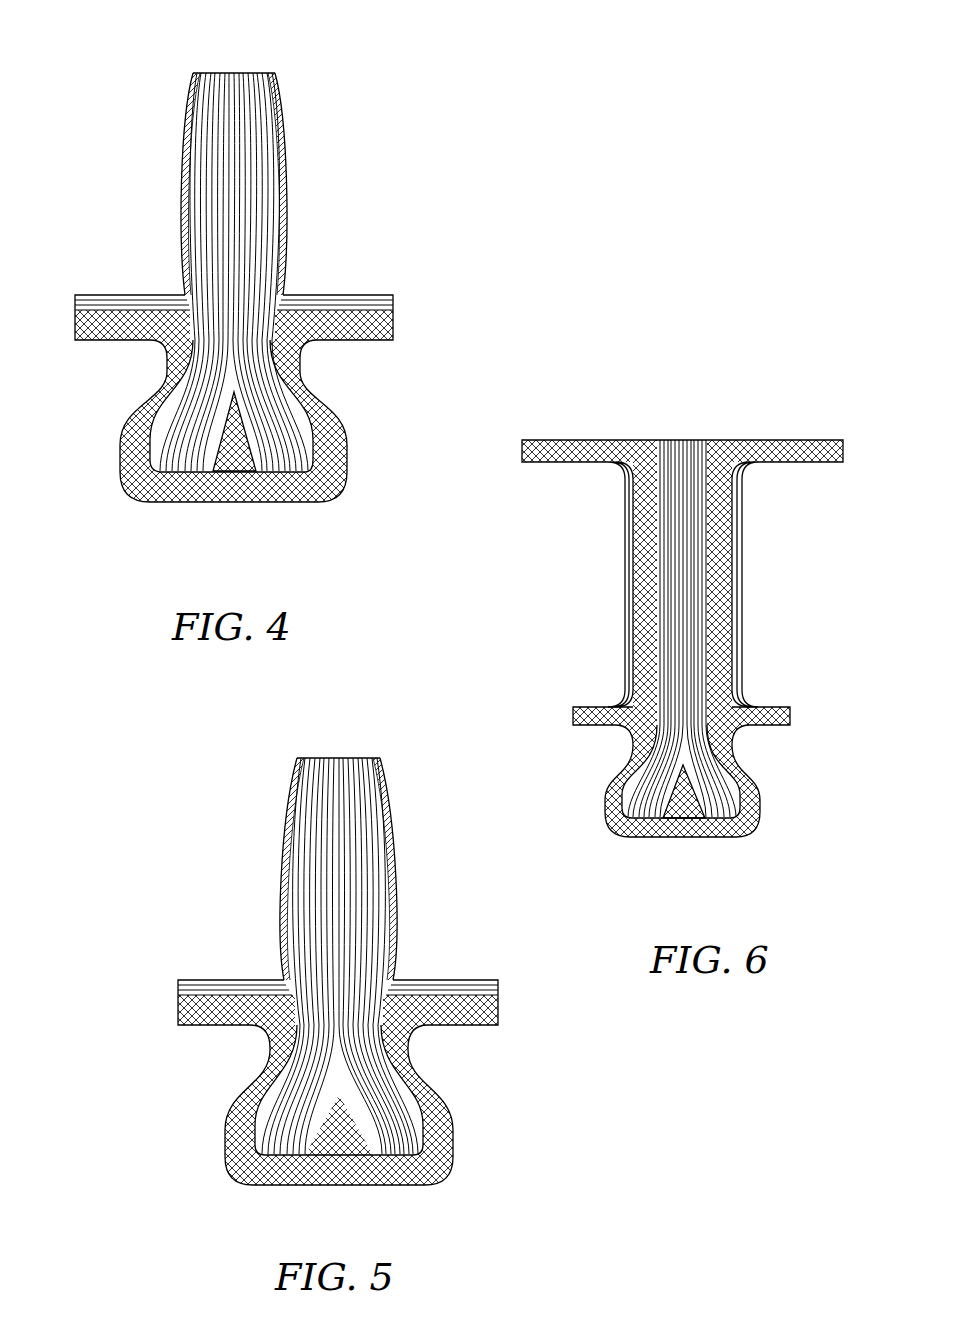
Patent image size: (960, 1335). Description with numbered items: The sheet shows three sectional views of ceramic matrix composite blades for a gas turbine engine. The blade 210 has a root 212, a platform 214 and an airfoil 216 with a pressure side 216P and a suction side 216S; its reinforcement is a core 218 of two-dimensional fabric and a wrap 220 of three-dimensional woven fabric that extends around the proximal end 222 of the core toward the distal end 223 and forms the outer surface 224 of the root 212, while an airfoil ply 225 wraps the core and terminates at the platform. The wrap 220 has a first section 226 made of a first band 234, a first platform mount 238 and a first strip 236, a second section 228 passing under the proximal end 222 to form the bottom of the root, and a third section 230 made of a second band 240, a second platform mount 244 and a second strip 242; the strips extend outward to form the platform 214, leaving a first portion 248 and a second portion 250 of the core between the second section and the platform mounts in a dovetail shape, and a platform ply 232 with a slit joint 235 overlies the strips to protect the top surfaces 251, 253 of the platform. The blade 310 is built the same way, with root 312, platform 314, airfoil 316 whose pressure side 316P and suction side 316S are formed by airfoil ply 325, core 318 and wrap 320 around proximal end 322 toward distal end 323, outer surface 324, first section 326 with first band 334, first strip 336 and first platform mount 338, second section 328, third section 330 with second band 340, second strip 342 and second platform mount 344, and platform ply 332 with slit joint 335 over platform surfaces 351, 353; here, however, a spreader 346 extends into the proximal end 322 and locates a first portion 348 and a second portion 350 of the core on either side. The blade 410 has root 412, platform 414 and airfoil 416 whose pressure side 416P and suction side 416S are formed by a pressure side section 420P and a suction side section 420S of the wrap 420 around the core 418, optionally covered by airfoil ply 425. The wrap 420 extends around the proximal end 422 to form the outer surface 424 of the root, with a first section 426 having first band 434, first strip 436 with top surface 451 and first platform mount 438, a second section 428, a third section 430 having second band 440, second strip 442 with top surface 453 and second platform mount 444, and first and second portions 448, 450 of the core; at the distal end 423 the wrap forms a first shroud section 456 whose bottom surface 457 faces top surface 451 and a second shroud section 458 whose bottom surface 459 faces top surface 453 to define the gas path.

In FIG. 4, the ceramic matrix composite blade 210 is at (112, 72).
In FIG. 4, the root 212 is at (117, 455).
In FIG. 4, the platform 214 is at (96, 305).
In FIG. 4, the airfoil 216 is at (178, 207).
In FIG. 4, the suction side 216S is at (181, 155).
In FIG. 4, the pressure side 216P is at (283, 165).
In FIG. 4, the core 218 is at (259, 71).
In FIG. 4, the wrap 220 is at (400, 325).
In FIG. 4, the proximal end 222 is at (250, 470).
In FIG. 4, the distal end 223 is at (212, 71).
In FIG. 4, the outer surface 224 is at (205, 504).
In FIG. 4, the airfoil ply 225 is at (292, 115).
In FIG. 4, the first section 226 is at (320, 400).
In FIG. 4, the second section 228 is at (245, 492).
In FIG. 4, the third section 230 is at (165, 380).
In FIG. 4, the platform ply 232 is at (397, 292).
In FIG. 4, the first band 234 is at (352, 432).
In FIG. 4, the slit joint 235 is at (78, 283).
In FIG. 4, the first strip 236 is at (306, 322).
In FIG. 4, the first platform mount 238 is at (306, 325).
In FIG. 4, the second band 240 is at (135, 420).
In FIG. 4, the second strip 242 is at (88, 325).
In FIG. 4, the second platform mount 244 is at (178, 336).
In FIG. 4, the first portion of the core 248 is at (305, 471).
In FIG. 4, the second portion of the core 250 is at (173, 463).
In FIG. 4, the top surface of the platform 251 is at (388, 297).
In FIG. 4, the top surface of the platform 253 is at (103, 320).
In FIG. 5, the ceramic matrix composite blade 310 is at (225, 775).
In FIG. 5, the root 312 is at (222, 1148).
In FIG. 5, the platform 314 is at (198, 993).
In FIG. 5, the airfoil 316 is at (280, 900).
In FIG. 5, the suction side 316S is at (282, 843).
In FIG. 5, the pressure side 316P is at (395, 868).
In FIG. 5, the core 318 is at (343, 756).
In FIG. 5, the wrap 320 is at (504, 1010).
In FIG. 5, the proximal end 322 is at (298, 1135).
In FIG. 5, the distal end 323 is at (361, 756).
In FIG. 5, the outer surface 324 is at (360, 1188).
In FIG. 5, the airfoil ply 325 is at (400, 793).
In FIG. 5, the first section 326 is at (432, 1095).
In FIG. 5, the second section 328 is at (386, 1190).
In FIG. 5, the third section 330 is at (262, 1072).
In FIG. 5, the platform ply 332 is at (500, 977).
In FIG. 5, the first band 334 is at (457, 1118).
In FIG. 5, the slit joint 335 is at (178, 975).
In FIG. 5, the first strip 336 is at (466, 1030).
In FIG. 5, the first platform mount 338 is at (412, 1005).
In FIG. 5, the second band 340 is at (228, 1118).
In FIG. 5, the second strip 342 is at (197, 1030).
In FIG. 5, the second platform mount 344 is at (276, 1017).
In FIG. 5, the spreader 346 is at (338, 1142).
In FIG. 5, the first portion of the core 348 is at (405, 1158).
In FIG. 5, the second portion of the core 350 is at (290, 1160).
In FIG. 5, the top layer 351 is at (490, 985).
In FIG. 5, the second layer 353 is at (208, 1003).
In FIG. 6, the ceramic matrix composite blade 410 is at (856, 438).
In FIG. 6, the root 412 is at (602, 812).
In FIG. 6, the platform 414 is at (583, 704).
In FIG. 6, the airfoil 416 is at (632, 565).
In FIG. 6, the suction side 416S is at (632, 604).
In FIG. 6, the pressure side 416P is at (734, 596).
In FIG. 6, the core 418 is at (690, 438).
In FIG. 6, the wrap 420 is at (757, 438).
In FIG. 6, the suction side section 420S is at (632, 530).
In FIG. 6, the pressure side section 420P is at (734, 556).
In FIG. 6, the proximal end 422 is at (692, 808).
In FIG. 6, the distal end 423 is at (631, 438).
In FIG. 6, the outer surface 424 is at (660, 840).
In FIG. 6, the airfoil ply 425 is at (746, 508).
In FIG. 6, the first section 426 is at (742, 755).
In FIG. 6, the second section 428 is at (700, 843).
In FIG. 6, the third section 430 is at (618, 763).
In FIG. 6, the first band 434 is at (770, 790).
In FIG. 6, the first strip 436 is at (792, 718).
In FIG. 6, the first platform mount 438 is at (749, 710).
In FIG. 6, the second band 440 is at (605, 785).
In FIG. 6, the second strip 442 is at (598, 720).
In FIG. 6, the second platform mount 444 is at (630, 716).
In FIG. 6, the first portion of the core 448 is at (735, 820).
In FIG. 6, the second portion of the core 450 is at (638, 826).
In FIG. 6, the top surface 451 is at (772, 710).
In FIG. 6, the top surface 453 is at (580, 713).
In FIG. 6, the first shroud section 456 is at (812, 438).
In FIG. 6, the bottom surface 457 is at (832, 464).
In FIG. 6, the second shroud section 458 is at (559, 438).
In FIG. 6, the bottom surface 459 is at (556, 464).